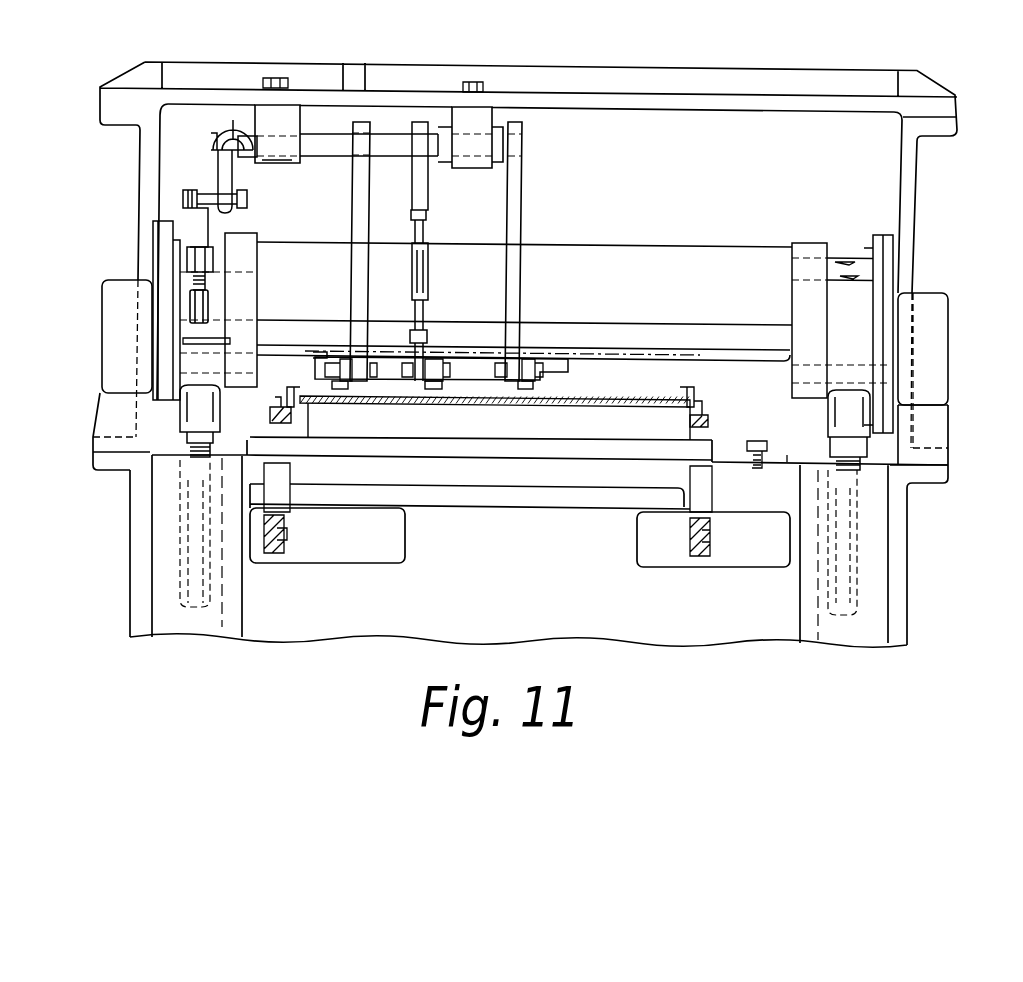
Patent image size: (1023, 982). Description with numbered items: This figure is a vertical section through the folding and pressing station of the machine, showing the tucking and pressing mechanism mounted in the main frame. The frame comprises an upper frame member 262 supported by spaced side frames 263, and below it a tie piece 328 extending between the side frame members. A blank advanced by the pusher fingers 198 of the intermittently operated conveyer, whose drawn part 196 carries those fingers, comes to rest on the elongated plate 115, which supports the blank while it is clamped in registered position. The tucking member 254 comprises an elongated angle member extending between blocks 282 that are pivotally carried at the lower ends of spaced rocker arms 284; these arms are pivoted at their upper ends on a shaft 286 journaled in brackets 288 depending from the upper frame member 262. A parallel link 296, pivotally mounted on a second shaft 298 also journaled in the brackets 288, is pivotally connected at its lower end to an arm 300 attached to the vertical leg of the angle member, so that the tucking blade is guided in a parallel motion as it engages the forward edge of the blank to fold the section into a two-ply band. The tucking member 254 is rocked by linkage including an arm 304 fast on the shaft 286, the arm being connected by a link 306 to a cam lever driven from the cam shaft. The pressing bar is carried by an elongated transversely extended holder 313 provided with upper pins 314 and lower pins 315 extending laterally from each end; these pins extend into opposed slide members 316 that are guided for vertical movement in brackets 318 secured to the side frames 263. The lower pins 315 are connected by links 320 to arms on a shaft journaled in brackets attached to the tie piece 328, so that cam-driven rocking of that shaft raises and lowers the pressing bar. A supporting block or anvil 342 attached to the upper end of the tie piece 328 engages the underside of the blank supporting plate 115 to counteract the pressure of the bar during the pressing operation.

The elongated plate 115 is at (662, 406).
The clamp block 196 is at (272, 403).
The pusher fingers 198 is at (288, 388).
The tucking member 254 is at (547, 373).
The upper frame member 262 is at (661, 73).
The side frames 263 is at (140, 190).
The blocks 282 is at (342, 389).
The rocker arms 284 is at (353, 259).
The shaft 286 is at (214, 148).
The brackets 288 is at (276, 164).
The parallel link 296 is at (428, 276).
The shaft 298 is at (343, 153).
The arm 300 is at (434, 389).
The arm 304 is at (223, 173).
The link 306 is at (192, 309).
The holder 313 is at (595, 246).
The upper pins 314 is at (214, 268).
The lower pins 315 is at (167, 360).
The slide members 316 is at (173, 332).
The brackets 318 is at (162, 233).
The links 320 is at (183, 520).
The tie piece 328 is at (745, 640).
The supporting block or anvil 342 is at (639, 408).